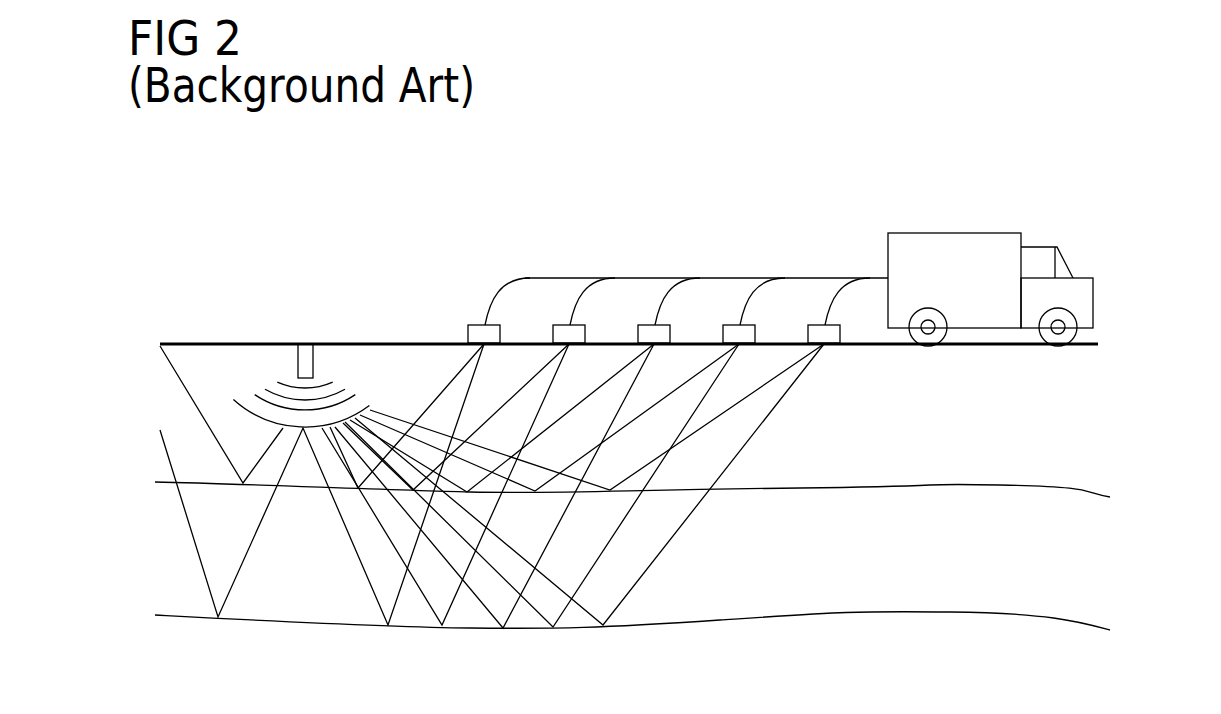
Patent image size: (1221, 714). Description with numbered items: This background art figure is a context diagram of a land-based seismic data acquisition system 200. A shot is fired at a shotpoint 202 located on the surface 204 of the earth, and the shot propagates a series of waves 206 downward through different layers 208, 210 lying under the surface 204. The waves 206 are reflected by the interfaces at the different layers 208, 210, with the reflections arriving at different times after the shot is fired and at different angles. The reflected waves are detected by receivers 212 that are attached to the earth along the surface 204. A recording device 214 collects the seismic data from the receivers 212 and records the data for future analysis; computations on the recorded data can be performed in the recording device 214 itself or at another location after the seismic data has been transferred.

The seismic survey system (background art) 200 is at (988, 68).
The shotpoint 202 is at (307, 342).
The surface 204 is at (1098, 344).
The waves 206 is at (337, 393).
The layer 208 is at (1095, 494).
The layer 210 is at (1095, 626).
The receivers 212 is at (641, 263).
The recording device 214 is at (930, 233).